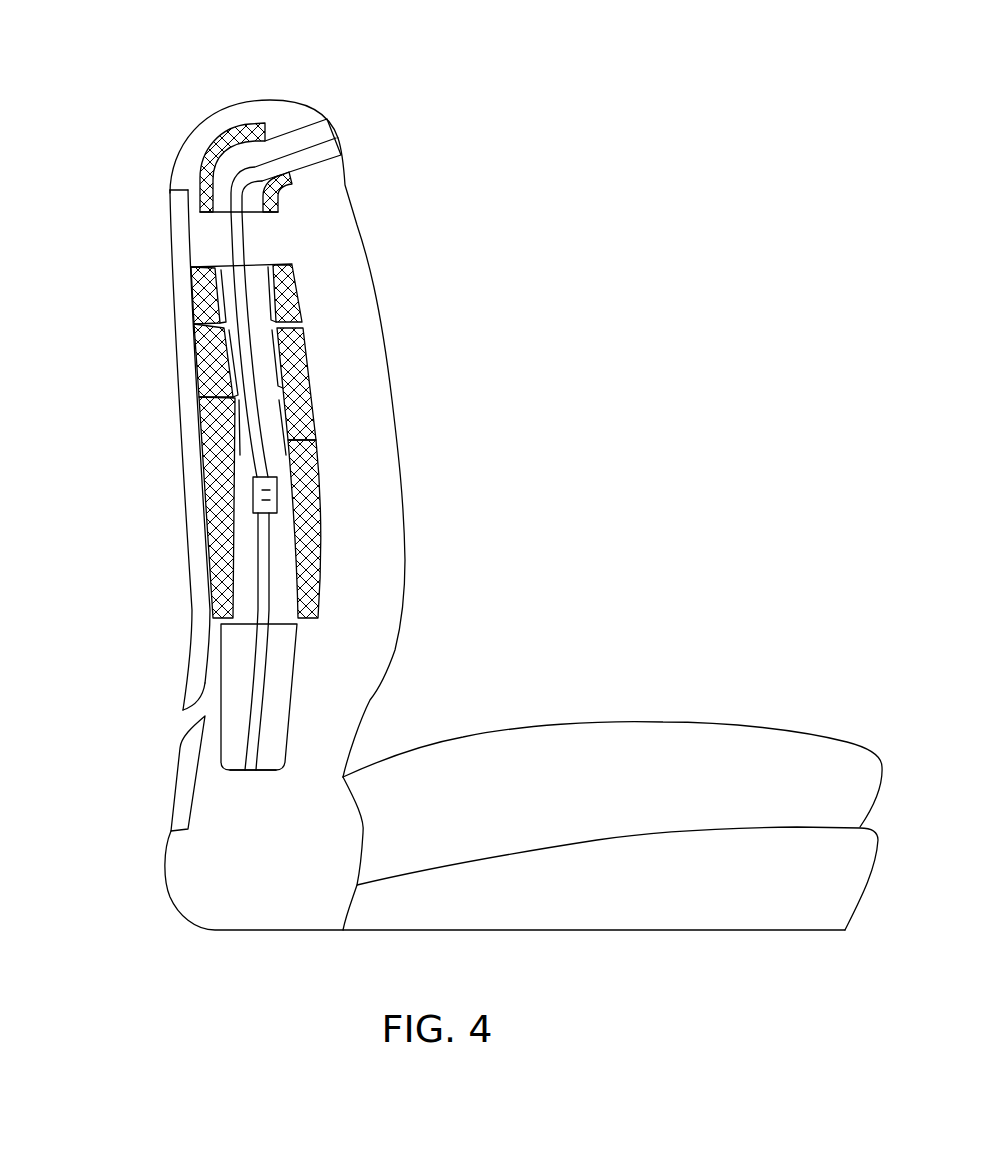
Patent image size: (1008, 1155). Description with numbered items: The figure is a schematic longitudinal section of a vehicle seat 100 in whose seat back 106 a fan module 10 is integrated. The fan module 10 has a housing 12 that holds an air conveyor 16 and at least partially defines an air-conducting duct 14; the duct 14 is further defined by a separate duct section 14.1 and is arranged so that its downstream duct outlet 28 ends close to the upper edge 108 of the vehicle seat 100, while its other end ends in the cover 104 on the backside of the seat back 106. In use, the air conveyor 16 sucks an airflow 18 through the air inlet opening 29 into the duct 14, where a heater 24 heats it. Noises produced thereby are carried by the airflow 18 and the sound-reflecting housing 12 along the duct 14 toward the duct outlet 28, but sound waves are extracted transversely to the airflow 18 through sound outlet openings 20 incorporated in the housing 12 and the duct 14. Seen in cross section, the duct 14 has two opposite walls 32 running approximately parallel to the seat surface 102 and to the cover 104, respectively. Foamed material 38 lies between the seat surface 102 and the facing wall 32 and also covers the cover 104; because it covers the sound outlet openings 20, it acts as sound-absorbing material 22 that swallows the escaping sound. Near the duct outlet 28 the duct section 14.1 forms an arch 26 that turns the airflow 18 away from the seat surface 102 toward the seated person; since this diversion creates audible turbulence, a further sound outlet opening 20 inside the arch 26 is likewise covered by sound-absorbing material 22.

The vehicle seat 100 is at (680, 360).
The seat surface 102 is at (505, 411).
The cover 104 is at (166, 222).
The seat back 106 is at (488, 502).
The upper edge 108 is at (310, 96).
The fan module 10 is at (104, 268).
The housing 12 is at (265, 776).
The air-conducting duct 14 is at (285, 412).
The duct section 14.1 is at (457, 79).
The air conveyor 16 is at (300, 692).
The airflow 18 is at (185, 727).
The sound outlet openings 20 is at (212, 190).
The sound-absorbing material 22 is at (227, 130).
The heater 24 is at (282, 495).
The arch 26 is at (263, 124).
The duct outlet 28 is at (350, 137).
The air inlet opening 29 is at (182, 718).
The walls 32 is at (213, 557).
The foamed material 38 is at (307, 316).